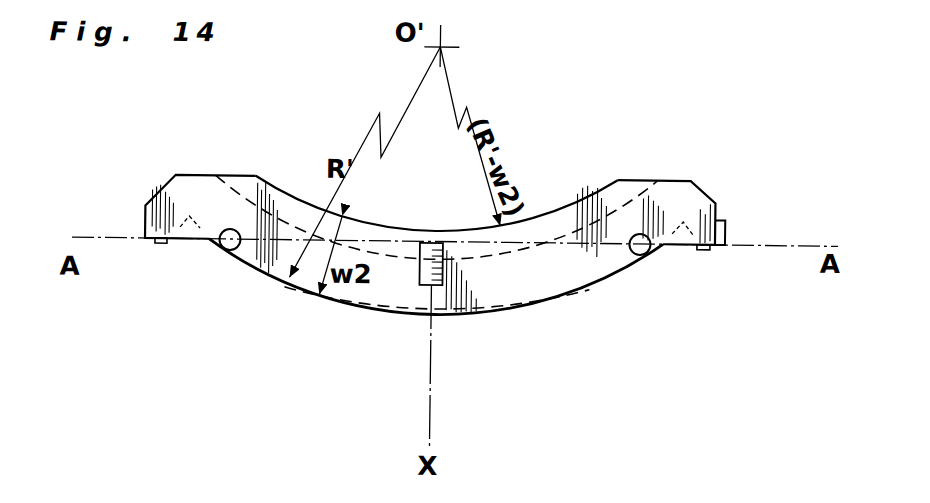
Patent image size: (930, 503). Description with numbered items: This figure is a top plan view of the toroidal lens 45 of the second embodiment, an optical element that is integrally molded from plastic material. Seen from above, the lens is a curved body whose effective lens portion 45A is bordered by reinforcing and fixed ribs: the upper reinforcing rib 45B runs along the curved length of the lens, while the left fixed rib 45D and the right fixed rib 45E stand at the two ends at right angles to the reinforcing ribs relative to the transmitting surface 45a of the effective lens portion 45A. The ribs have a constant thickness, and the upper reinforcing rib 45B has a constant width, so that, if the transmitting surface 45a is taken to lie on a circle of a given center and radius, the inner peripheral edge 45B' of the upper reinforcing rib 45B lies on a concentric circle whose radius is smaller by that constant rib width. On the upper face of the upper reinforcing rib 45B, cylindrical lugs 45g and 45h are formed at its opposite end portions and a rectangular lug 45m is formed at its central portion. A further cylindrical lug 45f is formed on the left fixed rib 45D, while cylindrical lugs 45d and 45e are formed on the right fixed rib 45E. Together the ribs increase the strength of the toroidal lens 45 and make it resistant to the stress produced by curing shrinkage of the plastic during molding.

The toroidal lens 45 is at (573, 203).
The left fixed rib 45D is at (145, 229).
The right fixed rib 45E is at (712, 200).
The cylindrical lug 45d is at (726, 225).
The cylindrical lug 45e is at (705, 247).
The cylindrical lug 45f is at (160, 248).
The cylindrical lug 45g is at (642, 253).
The cylindrical lug 45h is at (228, 253).
The rectangular lug 45m is at (433, 243).
The inner peripheral edge of the upper reinforcing rib 45B' is at (647, 133).
The effective lens portion 45A is at (510, 281).
The transmitting surface 45a is at (357, 307).
The upper reinforcing rib 45B is at (399, 355).